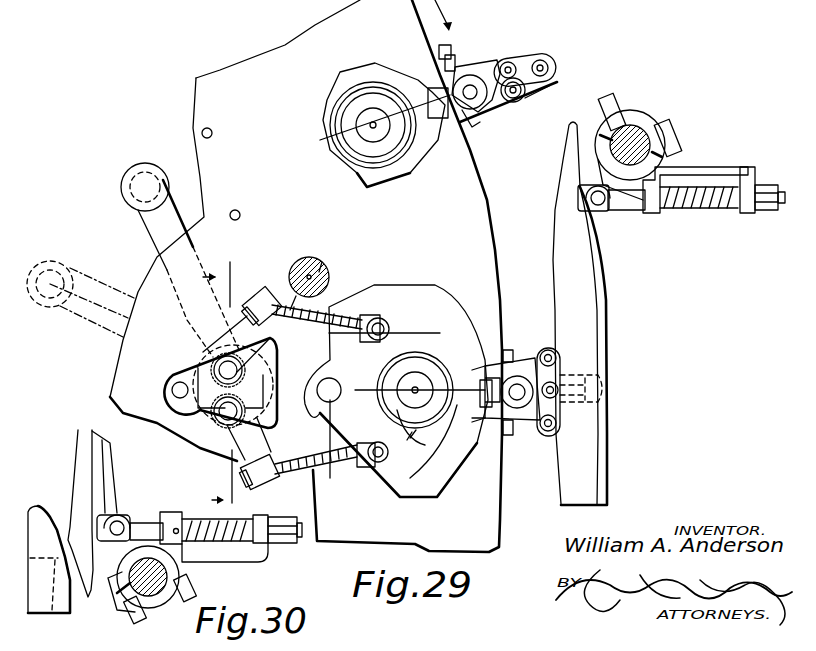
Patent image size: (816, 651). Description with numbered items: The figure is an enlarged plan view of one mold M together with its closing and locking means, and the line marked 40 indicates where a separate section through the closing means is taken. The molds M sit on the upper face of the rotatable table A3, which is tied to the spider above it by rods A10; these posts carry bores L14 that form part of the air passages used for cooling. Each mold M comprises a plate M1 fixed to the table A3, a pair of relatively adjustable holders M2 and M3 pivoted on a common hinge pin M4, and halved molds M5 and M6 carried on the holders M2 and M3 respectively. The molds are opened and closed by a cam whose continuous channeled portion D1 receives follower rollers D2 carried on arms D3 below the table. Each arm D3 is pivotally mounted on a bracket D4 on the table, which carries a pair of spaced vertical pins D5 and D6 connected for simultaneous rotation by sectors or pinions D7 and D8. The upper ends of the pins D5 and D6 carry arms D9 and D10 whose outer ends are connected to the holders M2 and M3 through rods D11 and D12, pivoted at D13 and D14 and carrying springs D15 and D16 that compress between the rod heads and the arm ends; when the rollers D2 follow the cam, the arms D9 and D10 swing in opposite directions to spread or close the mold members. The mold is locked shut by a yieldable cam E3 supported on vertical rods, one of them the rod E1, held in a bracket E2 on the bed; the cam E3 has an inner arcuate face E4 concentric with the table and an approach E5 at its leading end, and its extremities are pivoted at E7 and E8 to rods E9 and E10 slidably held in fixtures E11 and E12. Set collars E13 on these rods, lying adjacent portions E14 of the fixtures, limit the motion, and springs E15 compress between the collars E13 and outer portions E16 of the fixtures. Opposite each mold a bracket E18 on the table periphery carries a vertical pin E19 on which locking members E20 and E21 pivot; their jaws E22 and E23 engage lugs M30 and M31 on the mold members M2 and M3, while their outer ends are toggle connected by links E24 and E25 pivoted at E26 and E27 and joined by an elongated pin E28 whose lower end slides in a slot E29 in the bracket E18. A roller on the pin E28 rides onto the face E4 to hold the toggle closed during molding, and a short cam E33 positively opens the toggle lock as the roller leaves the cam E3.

In FIG. 29, the rotatable table A3 is at (217, 98).
In FIG. 29, the rods A10 is at (312, 256).
In FIG. 29, the bores L14 is at (322, 262).
In FIG. 29, the continuous channeled portion D1 is at (278, 298).
In FIG. 29, the follower rollers D2 is at (137, 163).
In FIG. 29, the arms D3 is at (167, 223).
In FIG. 29, the brackets D4 is at (165, 385).
In FIG. 29, the pin D5 is at (226, 362).
In FIG. 29, the pin D6 is at (215, 412).
In FIG. 29, the sector or pinion D7 is at (200, 370).
In FIG. 29, the sector or pinion D8 is at (205, 404).
In FIG. 29, the arm D9 is at (242, 292).
In FIG. 29, the arm D10 is at (270, 455).
In FIG. 29, the rod D11 is at (322, 306).
In FIG. 29, the rod D12 is at (320, 460).
In FIG. 29, the pivot D13 is at (374, 317).
In FIG. 29, the pivot D14 is at (360, 467).
In FIG. 29, the spring D15 is at (300, 262).
In FIG. 29, the spring D16 is at (270, 470).
In FIG. 29, the section line 40 is at (204, 284).
In FIG. 30, the section line 40 is at (210, 480).
In FIG. 29, the mold M is at (419, 360).
In FIG. 29, the plate M1 is at (390, 288).
In FIG. 29, the mold holder M2 is at (407, 440).
In FIG. 29, the mold holder M3 is at (412, 337).
In FIG. 29, the hinge pin M4 is at (326, 388).
In FIG. 29, the halved mold M5 is at (410, 438).
In FIG. 29, the halved mold M6 is at (430, 366).
In FIG. 29, the lug M30 is at (423, 416).
In FIG. 29, the lug M31 is at (490, 377).
In FIG. 29, the rod E1 is at (638, 127).
In FIG. 30, the rod E1 is at (130, 587).
In FIG. 30, the bracket E2 is at (87, 570).
In FIG. 29, the yieldable cam E3 is at (573, 270).
In FIG. 30, the yieldable cam E3 is at (100, 440).
In FIG. 29, the inner arcuate face E4 is at (560, 266).
In FIG. 29, the approach E5 is at (560, 173).
In FIG. 29, the pivot point E7 is at (605, 210).
In FIG. 30, the pivot point E8 is at (118, 520).
In FIG. 29, the rod E9 is at (633, 204).
In FIG. 30, the rod E10 is at (138, 522).
In FIG. 29, the fixture E11 is at (668, 180).
In FIG. 30, the fixture E12 is at (217, 553).
In FIG. 29, the set collars E13 is at (662, 208).
In FIG. 30, the set collars E13 is at (174, 512).
In FIG. 29, the portions E14 is at (693, 167).
In FIG. 30, the portions E14 is at (167, 535).
In FIG. 29, the springs E15 is at (702, 190).
In FIG. 30, the springs E15 is at (190, 548).
In FIG. 29, the outer portions E16 is at (748, 216).
In FIG. 30, the outer portions E16 is at (273, 553).
In FIG. 29, the bracket E18 is at (505, 350).
In FIG. 29, the pin E19 is at (490, 83).
In FIG. 29, the mold locking member E20 is at (522, 108).
In FIG. 29, the mold locking member E21 is at (472, 86).
In FIG. 29, the jaw E22 is at (523, 117).
In FIG. 29, the jaw E23 is at (453, 50).
In FIG. 29, the link E24 is at (558, 68).
In FIG. 29, the link E25 is at (527, 62).
In FIG. 29, the pivot point E26 is at (549, 85).
In FIG. 29, the pivot point E27 is at (512, 62).
In FIG. 29, the elongated pin E28 is at (550, 58).
In FIG. 29, the slot E29 is at (604, 380).
In FIG. 30, the short cam E33 is at (78, 570).